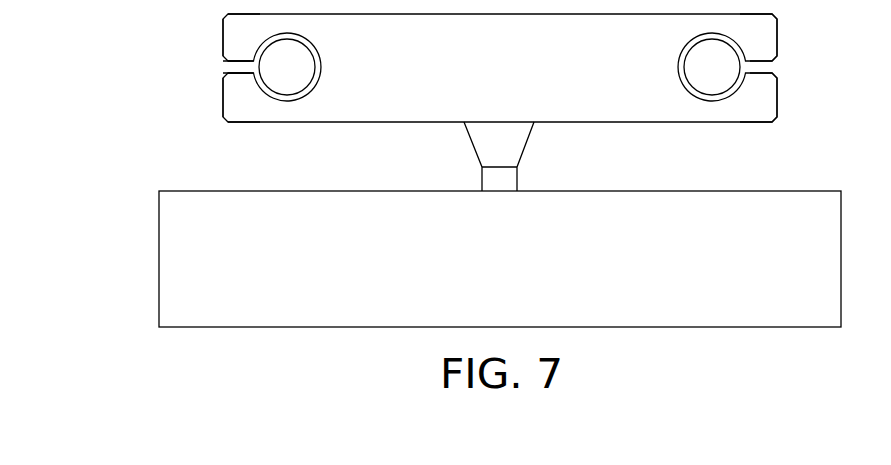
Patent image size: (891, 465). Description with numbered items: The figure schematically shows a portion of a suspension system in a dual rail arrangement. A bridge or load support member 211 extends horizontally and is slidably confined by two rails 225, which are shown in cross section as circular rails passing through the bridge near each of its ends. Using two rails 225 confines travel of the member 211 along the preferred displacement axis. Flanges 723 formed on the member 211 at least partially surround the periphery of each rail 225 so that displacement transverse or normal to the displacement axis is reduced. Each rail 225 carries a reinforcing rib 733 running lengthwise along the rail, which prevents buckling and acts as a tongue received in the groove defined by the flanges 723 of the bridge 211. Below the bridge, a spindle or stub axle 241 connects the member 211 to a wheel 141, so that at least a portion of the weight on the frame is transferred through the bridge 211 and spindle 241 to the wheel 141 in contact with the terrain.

The wheel 141 is at (159, 239).
The bridge or load support member 211 is at (412, 115).
The rail 225 is at (287, 85).
The spindle or stub axle 241 is at (530, 137).
The flange 723 is at (223, 34).
The reinforcing rib 733 is at (222, 68).